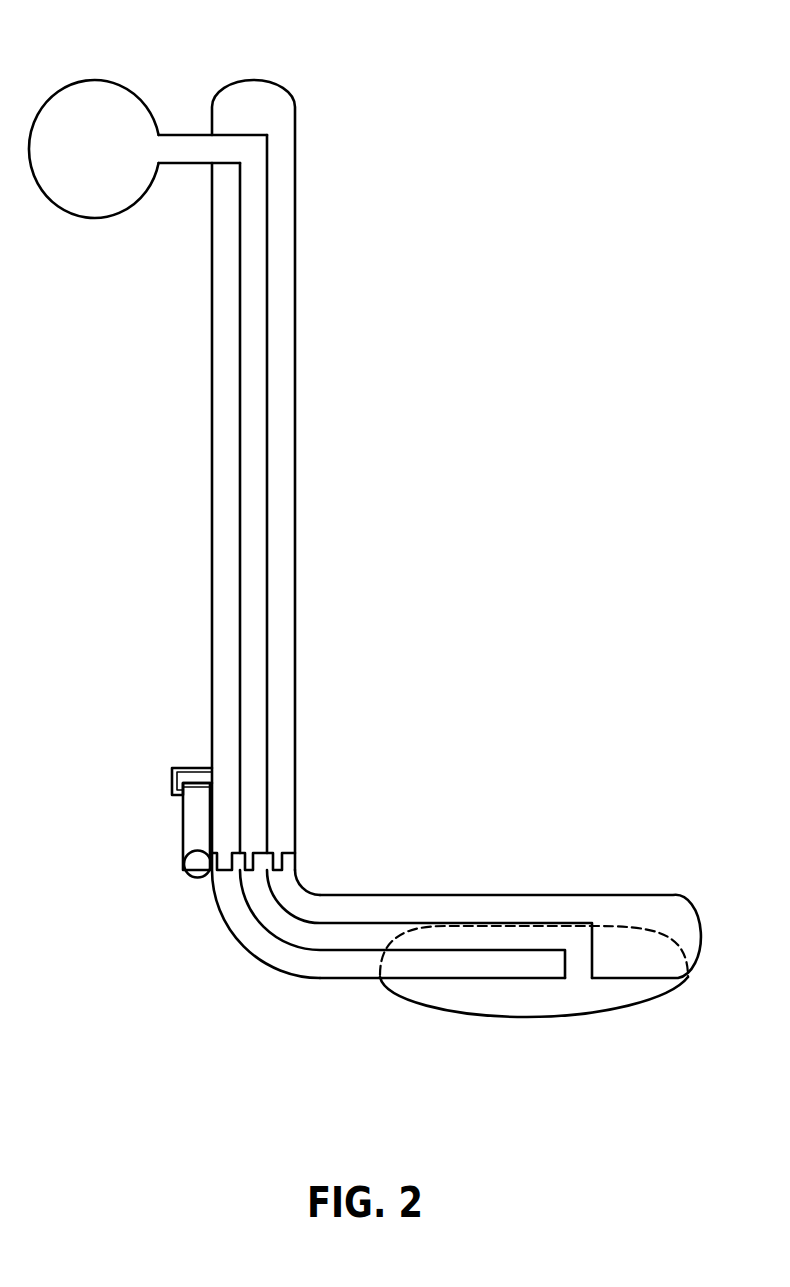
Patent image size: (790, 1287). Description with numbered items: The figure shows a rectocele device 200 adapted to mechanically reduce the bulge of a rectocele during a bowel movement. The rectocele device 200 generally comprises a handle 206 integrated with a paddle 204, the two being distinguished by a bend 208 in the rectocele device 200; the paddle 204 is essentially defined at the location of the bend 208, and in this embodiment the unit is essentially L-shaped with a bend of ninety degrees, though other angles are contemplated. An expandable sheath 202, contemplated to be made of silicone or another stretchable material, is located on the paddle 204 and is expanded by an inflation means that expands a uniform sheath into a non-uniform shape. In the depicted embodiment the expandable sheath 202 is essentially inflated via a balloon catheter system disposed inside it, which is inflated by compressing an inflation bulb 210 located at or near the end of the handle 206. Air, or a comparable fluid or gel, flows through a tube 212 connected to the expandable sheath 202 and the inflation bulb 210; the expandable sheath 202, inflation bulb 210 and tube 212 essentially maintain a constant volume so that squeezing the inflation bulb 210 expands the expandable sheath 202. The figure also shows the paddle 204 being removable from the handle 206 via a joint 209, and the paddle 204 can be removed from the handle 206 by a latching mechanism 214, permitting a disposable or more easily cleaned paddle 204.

The rectocele device 200 is at (508, 462).
The expandable sheath 202 is at (545, 1018).
The paddle 204 is at (493, 893).
The handle 206 is at (212, 622).
The bend 208 is at (322, 876).
The joint 209 is at (252, 867).
The inflation bulb 210 is at (87, 78).
The tube 212 is at (267, 385).
The latching mechanism 214 is at (182, 815).